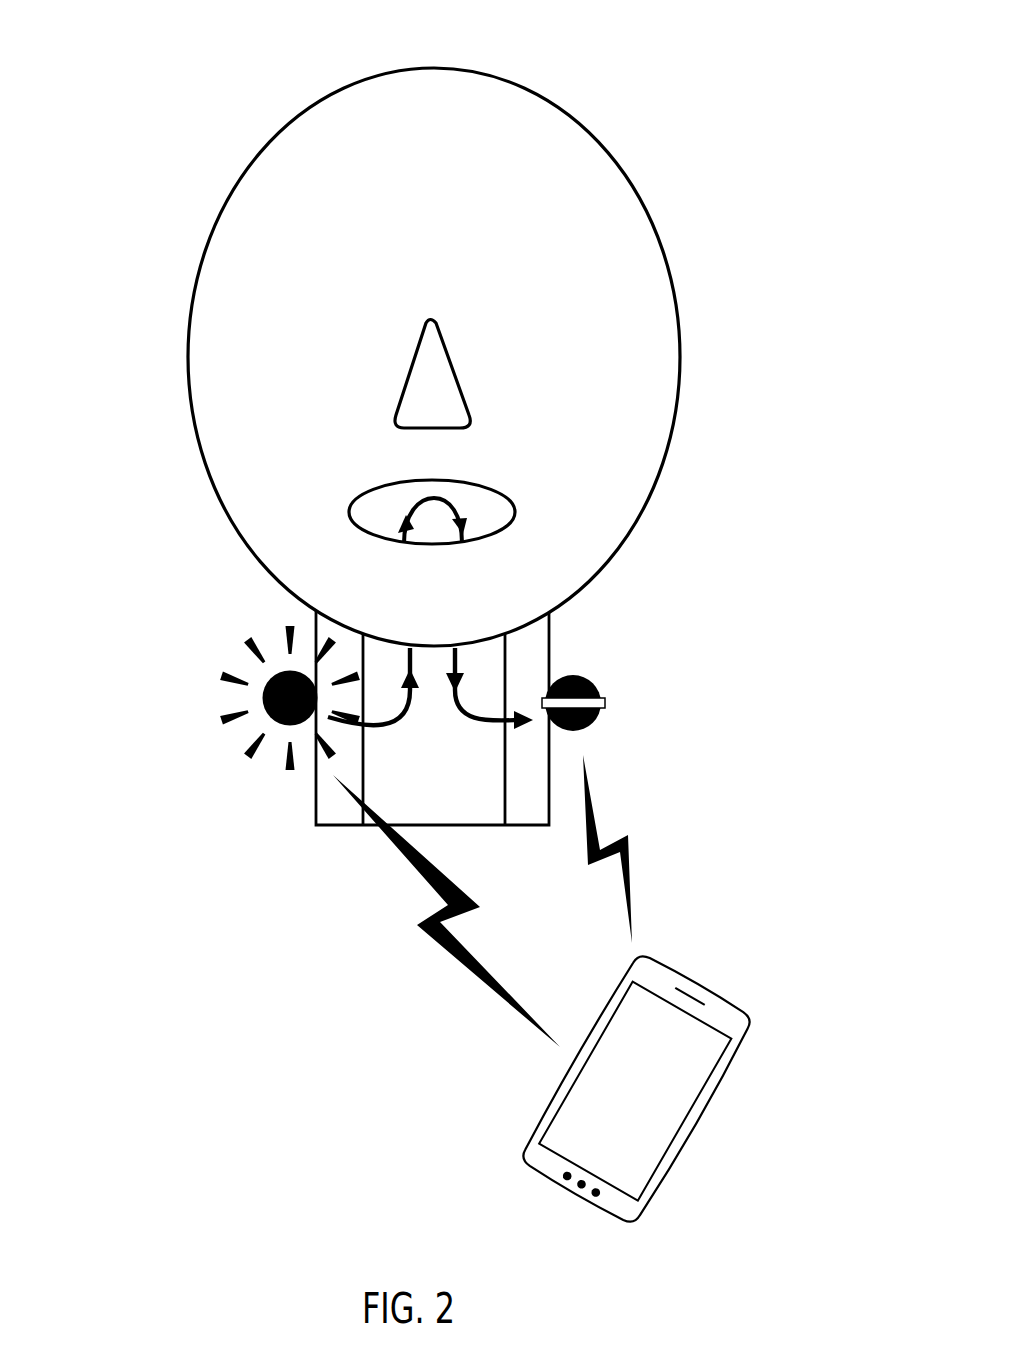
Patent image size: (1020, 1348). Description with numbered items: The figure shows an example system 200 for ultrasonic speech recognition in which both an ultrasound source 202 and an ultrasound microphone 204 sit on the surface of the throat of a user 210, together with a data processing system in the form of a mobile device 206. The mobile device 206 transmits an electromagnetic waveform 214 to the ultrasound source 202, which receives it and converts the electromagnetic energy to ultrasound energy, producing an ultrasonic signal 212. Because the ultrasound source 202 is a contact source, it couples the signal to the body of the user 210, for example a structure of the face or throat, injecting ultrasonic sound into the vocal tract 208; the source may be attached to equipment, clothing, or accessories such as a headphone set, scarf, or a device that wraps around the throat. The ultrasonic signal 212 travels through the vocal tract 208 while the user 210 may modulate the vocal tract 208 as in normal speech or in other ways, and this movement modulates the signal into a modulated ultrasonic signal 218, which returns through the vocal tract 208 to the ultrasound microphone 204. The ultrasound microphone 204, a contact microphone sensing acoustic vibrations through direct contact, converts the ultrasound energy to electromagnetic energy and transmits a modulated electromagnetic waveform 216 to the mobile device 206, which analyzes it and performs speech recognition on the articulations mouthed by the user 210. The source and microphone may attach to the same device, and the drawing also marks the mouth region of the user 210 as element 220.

The system 200 is at (208, 62).
The ultrasound source 202 is at (264, 678).
The ultrasound microphone 204 is at (597, 686).
The mobile device 206 is at (713, 1095).
The vocal tract 208 is at (507, 796).
The user 210 is at (216, 216).
The ultrasonic signal 212 is at (366, 724).
The electromagnetic waveform 214 is at (417, 924).
The modulated electromagnetic waveform 216 is at (629, 843).
The modulated ultrasonic signal 218 is at (500, 723).
The mouth 220 is at (497, 489).